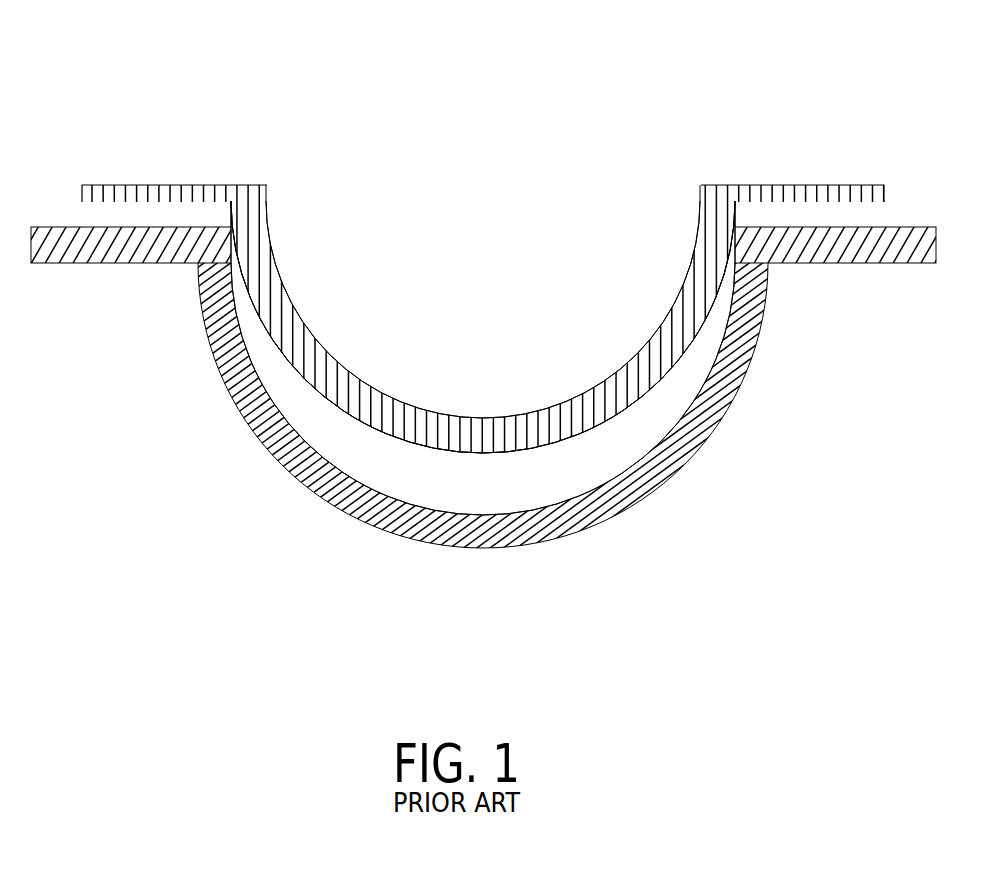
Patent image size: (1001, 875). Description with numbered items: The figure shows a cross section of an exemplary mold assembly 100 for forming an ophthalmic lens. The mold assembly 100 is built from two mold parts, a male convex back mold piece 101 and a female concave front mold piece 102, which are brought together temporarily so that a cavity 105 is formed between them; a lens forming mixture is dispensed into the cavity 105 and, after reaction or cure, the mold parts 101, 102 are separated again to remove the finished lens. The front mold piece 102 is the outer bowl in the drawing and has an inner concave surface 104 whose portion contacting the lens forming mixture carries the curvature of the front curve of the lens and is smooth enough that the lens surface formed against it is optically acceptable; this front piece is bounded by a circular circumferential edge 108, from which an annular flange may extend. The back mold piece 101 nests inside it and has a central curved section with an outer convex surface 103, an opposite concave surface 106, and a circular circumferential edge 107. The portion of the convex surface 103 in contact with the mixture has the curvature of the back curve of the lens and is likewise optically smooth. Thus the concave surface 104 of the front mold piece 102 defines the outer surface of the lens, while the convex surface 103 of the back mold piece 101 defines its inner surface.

The mold assembly 100 is at (413, 227).
The back mold piece 101 is at (686, 298).
The front mold piece 102 is at (327, 487).
The convex surface 103 is at (535, 447).
The concave surface 104 is at (573, 498).
The cavity 105 is at (465, 472).
The concave surface of back mold piece 106 is at (602, 383).
The circular circumferential edge of back mold piece 107 is at (762, 200).
The circular circumferential edge of front mold piece 108 is at (833, 263).